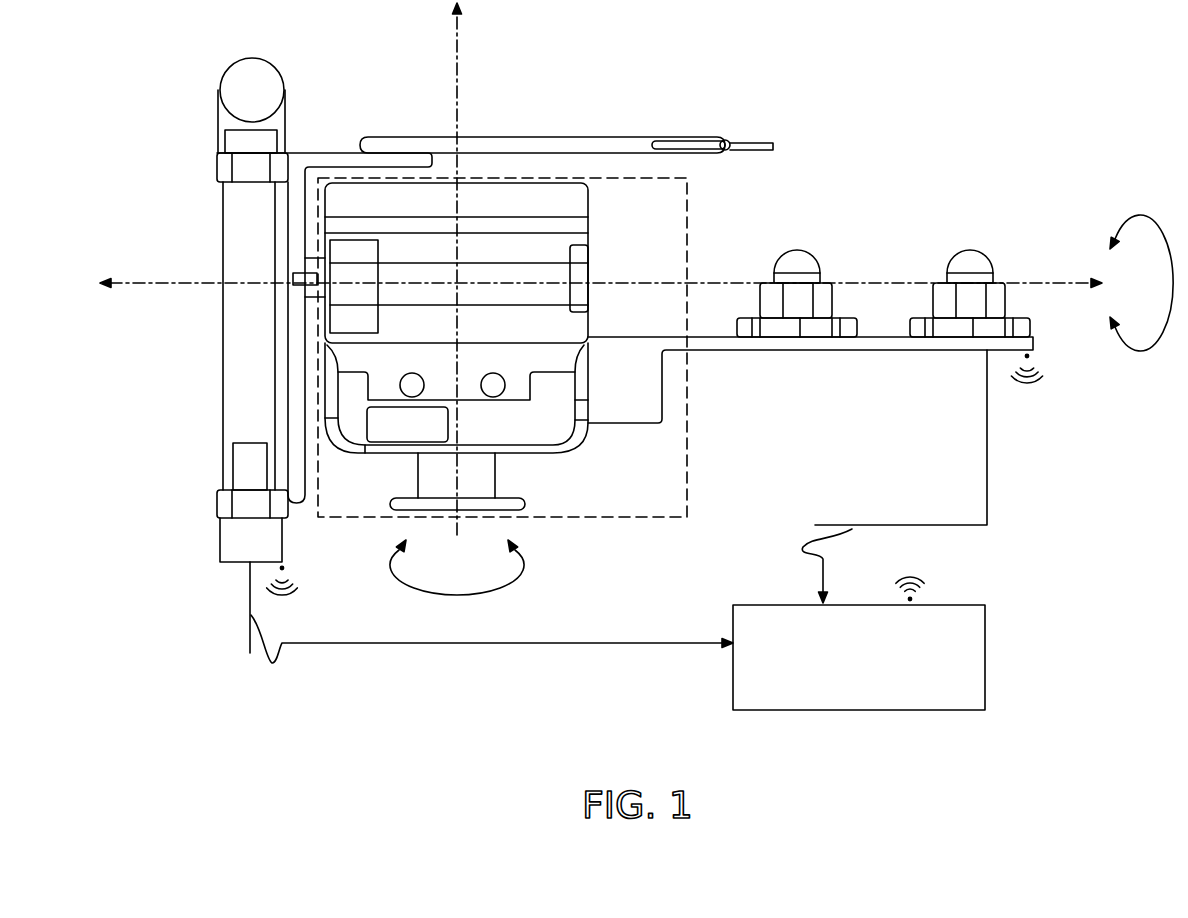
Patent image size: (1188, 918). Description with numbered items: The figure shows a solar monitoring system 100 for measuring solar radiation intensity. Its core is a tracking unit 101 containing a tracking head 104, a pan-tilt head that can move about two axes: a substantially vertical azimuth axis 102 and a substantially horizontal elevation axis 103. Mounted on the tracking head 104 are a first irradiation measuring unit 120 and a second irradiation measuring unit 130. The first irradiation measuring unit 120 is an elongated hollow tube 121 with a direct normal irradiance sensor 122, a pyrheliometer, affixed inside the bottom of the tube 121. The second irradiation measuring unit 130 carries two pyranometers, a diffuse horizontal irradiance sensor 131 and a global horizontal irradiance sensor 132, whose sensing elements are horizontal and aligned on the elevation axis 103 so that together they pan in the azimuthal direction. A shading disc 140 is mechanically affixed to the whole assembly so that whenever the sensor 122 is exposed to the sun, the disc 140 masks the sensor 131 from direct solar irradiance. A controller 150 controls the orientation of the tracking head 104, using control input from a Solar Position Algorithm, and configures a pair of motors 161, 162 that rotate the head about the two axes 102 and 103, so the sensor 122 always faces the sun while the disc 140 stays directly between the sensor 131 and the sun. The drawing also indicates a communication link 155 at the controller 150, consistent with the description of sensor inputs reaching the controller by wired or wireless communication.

The solar monitoring system 100 is at (1021, 114).
The tracking unit 101 is at (690, 432).
The azimuth axis 102 is at (457, 462).
The elevation axis 103 is at (1038, 283).
The tracking head 104 is at (588, 227).
The first irradiation measuring unit 120 is at (281, 76).
The elongated hollow tube 121 is at (222, 340).
The direct normal irradiance (DNI) sensor 122 is at (248, 468).
The second irradiation measuring unit 130 is at (825, 328).
The diffuse horizontal irradiance (DHI) sensor 131 is at (803, 292).
The global horizontal irradiance (GHI) sensor 132 is at (976, 292).
The shading disc 140 is at (773, 147).
The controller 150 is at (985, 660).
The wireless transceiver 155 is at (926, 580).
The motor 161 is at (343, 255).
The motor 162 is at (383, 430).